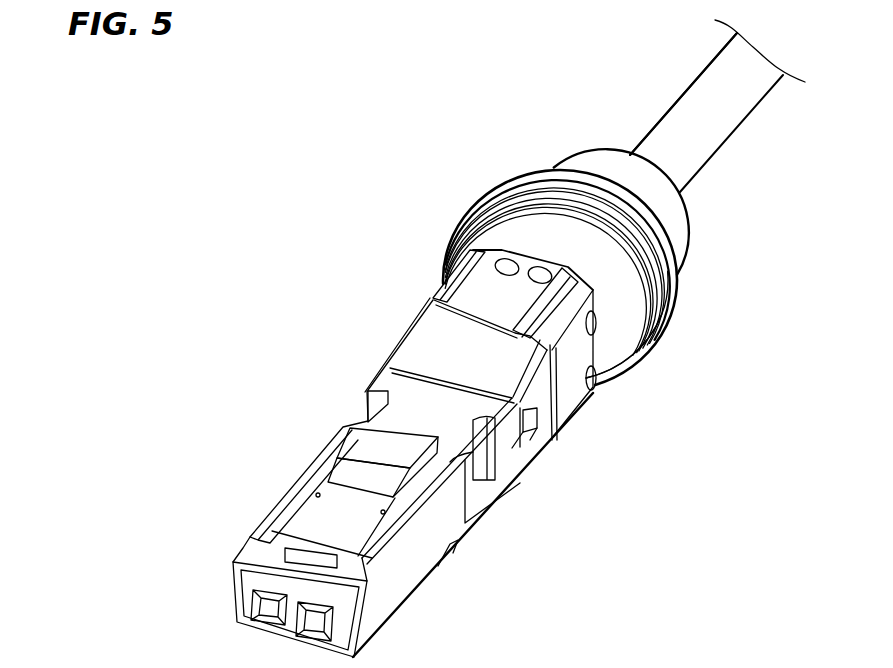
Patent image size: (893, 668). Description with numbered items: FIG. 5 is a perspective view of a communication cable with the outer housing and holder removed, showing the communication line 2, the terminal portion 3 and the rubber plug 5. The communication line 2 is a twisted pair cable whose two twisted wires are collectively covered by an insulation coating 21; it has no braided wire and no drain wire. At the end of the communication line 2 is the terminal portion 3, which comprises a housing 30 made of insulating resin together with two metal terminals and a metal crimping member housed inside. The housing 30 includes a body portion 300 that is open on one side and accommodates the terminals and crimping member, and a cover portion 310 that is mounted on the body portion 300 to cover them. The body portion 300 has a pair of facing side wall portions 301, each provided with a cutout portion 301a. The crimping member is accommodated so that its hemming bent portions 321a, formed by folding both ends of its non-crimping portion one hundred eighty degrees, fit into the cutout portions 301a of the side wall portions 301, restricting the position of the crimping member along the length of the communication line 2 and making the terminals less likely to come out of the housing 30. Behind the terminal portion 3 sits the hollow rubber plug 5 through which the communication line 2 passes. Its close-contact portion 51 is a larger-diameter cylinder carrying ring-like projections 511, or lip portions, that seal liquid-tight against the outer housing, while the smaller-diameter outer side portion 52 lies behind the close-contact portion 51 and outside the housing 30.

The communication line 2 is at (727, 121).
The insulation coating 21 is at (693, 95).
The terminal portion 3 is at (356, 409).
The housing 30 is at (415, 578).
The body portion 300 is at (300, 518).
The side wall portions 301 is at (383, 381).
The cutout portion 301a is at (522, 446).
The cover portion 310 is at (458, 533).
The hemming bent portions 321a is at (523, 436).
The rubber plug 5 is at (668, 297).
The close-contact portion 51 is at (660, 345).
The projections 511 is at (498, 216).
The outer side portion 52 is at (594, 162).